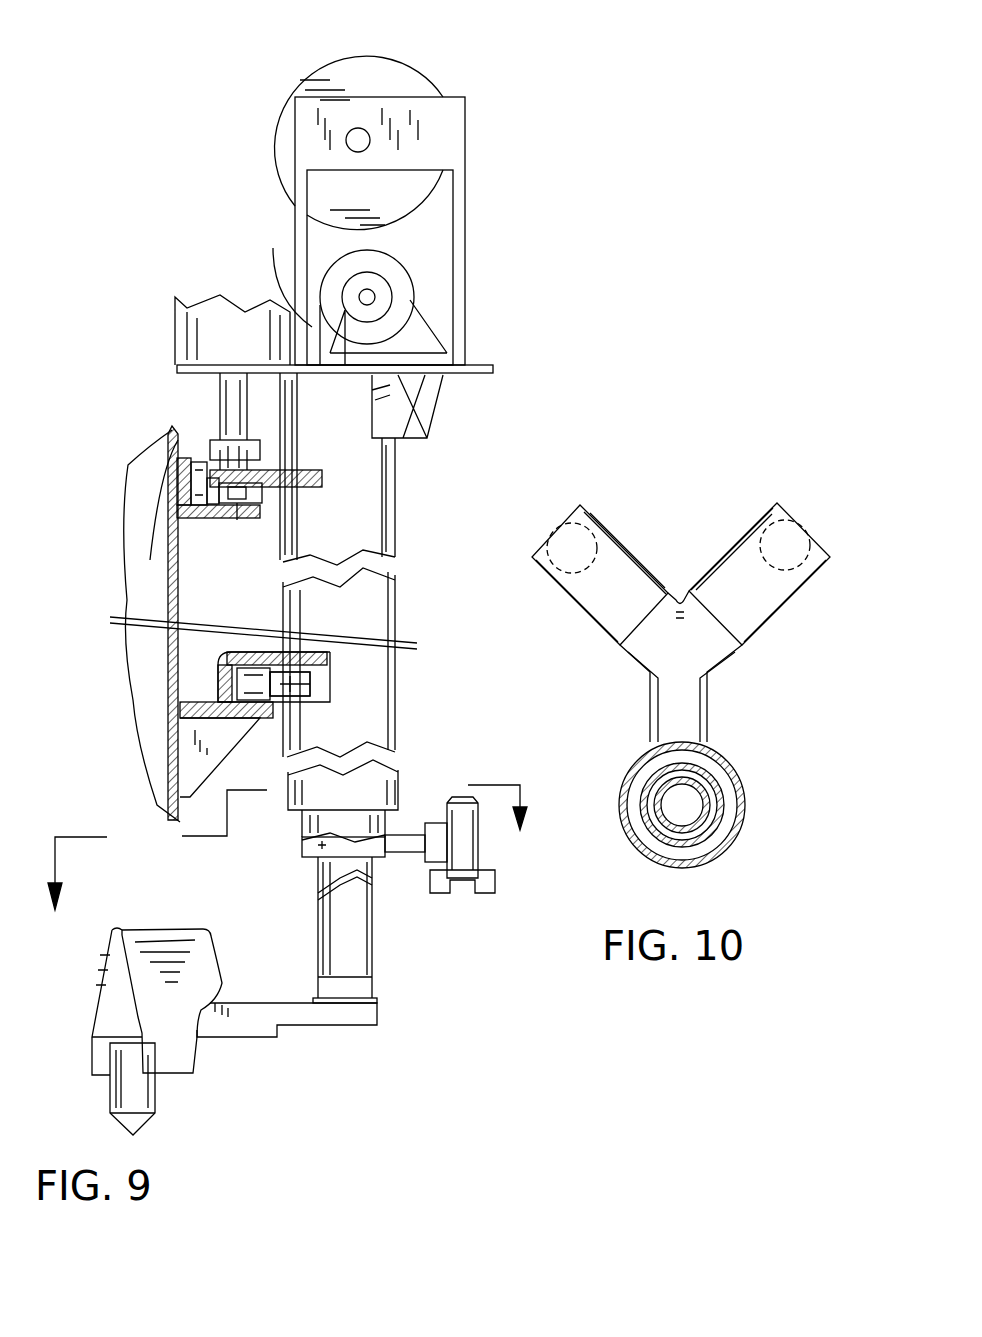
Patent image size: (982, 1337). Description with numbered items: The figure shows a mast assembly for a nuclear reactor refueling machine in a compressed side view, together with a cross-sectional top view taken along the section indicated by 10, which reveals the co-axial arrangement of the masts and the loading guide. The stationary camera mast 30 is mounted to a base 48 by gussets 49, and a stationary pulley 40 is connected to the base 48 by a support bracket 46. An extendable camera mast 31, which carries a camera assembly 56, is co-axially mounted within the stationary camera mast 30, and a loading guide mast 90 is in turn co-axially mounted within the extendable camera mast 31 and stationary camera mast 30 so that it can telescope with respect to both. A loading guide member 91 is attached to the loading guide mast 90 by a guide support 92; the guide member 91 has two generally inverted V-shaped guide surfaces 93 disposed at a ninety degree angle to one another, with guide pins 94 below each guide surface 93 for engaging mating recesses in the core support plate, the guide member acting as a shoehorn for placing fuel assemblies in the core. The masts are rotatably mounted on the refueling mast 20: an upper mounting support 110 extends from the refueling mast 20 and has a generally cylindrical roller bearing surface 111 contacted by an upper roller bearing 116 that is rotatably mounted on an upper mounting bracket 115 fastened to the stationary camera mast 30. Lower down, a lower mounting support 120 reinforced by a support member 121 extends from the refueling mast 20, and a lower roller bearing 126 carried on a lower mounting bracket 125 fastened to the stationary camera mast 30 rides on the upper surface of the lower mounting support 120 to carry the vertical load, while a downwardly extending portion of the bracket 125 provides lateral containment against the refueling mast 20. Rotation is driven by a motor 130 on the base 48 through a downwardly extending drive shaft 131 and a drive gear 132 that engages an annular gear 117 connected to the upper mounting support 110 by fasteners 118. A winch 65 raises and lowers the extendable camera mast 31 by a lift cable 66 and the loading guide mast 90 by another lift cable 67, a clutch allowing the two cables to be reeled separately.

In FIG. 9, the section view indicator 10 is at (291, 862).
In FIG. 9, the refueling mast 20 is at (165, 675).
In FIG. 9, the stationary camera mast 30 is at (385, 527).
In FIG. 10, the stationary camera mast 30 is at (733, 845).
In FIG. 9, the extendable camera mast 31 is at (302, 848).
In FIG. 10, the extendable camera mast 31 is at (723, 799).
In FIG. 9, the stationary pulley 40 is at (387, 73).
In FIG. 9, the support bracket 46 is at (440, 133).
In FIG. 9, the base 48 is at (483, 362).
In FIG. 9, the gussets 49 is at (413, 420).
In FIG. 9, the camera assembly 56 is at (462, 870).
In FIG. 9, the winch 65 is at (402, 282).
In FIG. 9, the lift cable 66 is at (275, 278).
In FIG. 9, the lift cable 67 is at (412, 322).
In FIG. 9, the loading guide mast 90 is at (362, 940).
In FIG. 10, the loading guide mast 90 is at (707, 775).
In FIG. 9, the loading guide member 91 is at (110, 1013).
In FIG. 9, the guide support 92 is at (243, 1027).
In FIG. 10, the guide support 92 is at (693, 695).
In FIG. 9, the guide surfaces 93 is at (204, 960).
In FIG. 10, the guide surfaces 93 is at (610, 557).
In FIG. 9, the guide pins 94 is at (123, 1093).
In FIG. 10, the guide pins 94 is at (562, 537).
In FIG. 9, the upper mounting support 110 is at (185, 530).
In FIG. 9, the roller bearing surface 111 is at (237, 520).
In FIG. 9, the upper mounting bracket 115 is at (297, 467).
In FIG. 9, the upper roller bearing 116 is at (258, 497).
In FIG. 9, the annular gear 117 is at (170, 434).
In FIG. 9, the fasteners 118 is at (177, 480).
In FIG. 9, the lower mounting support 120 is at (200, 718).
In FIG. 9, the support member 121 is at (193, 767).
In FIG. 9, the lower mounting bracket 125 is at (302, 652).
In FIG. 9, the lower roller bearing 126 is at (275, 700).
In FIG. 9, the motor 130 is at (182, 332).
In FIG. 9, the drive shaft 131 is at (230, 385).
In FIG. 9, the drive gear 132 is at (208, 455).